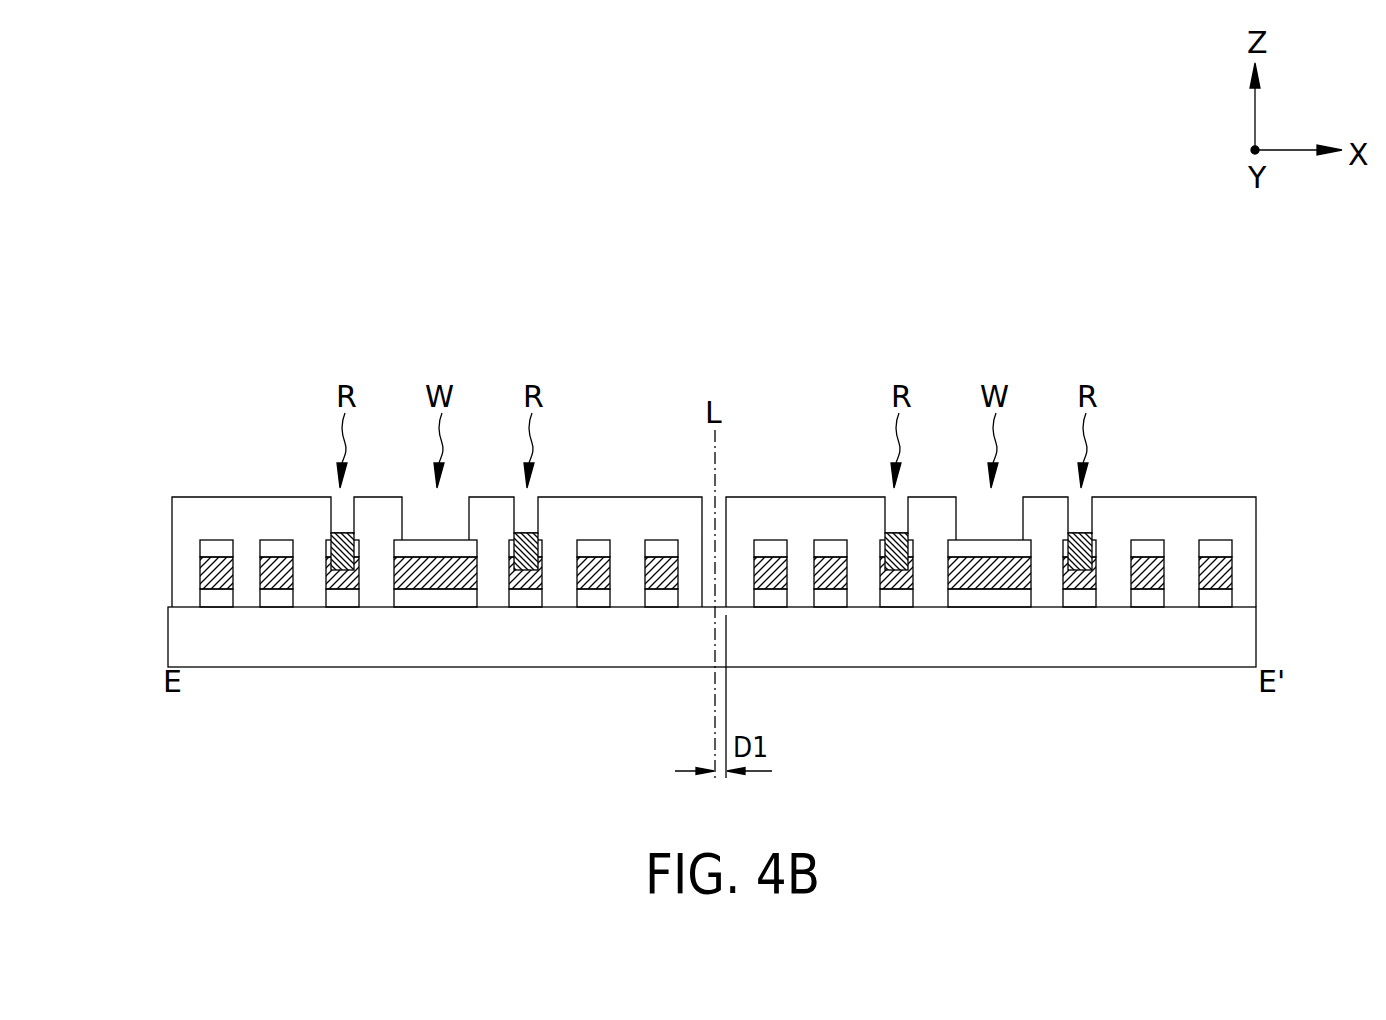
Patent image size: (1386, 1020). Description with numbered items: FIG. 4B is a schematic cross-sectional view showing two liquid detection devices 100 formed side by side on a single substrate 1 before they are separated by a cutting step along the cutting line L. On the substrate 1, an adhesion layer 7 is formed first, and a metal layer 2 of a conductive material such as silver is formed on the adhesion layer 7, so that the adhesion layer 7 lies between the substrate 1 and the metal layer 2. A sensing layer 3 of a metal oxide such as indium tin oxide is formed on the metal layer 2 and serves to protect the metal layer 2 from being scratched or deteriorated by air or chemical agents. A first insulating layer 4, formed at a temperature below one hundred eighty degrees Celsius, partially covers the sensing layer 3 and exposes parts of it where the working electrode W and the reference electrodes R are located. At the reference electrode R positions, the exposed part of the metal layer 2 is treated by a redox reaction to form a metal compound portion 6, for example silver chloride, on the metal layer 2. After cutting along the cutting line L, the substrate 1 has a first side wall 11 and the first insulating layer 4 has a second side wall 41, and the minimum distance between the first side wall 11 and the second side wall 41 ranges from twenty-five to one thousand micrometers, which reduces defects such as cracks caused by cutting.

The liquid detection device 100 is at (693, 532).
The substrate 1 is at (1223, 638).
The metal layer 2 is at (1218, 568).
The sensing layer 3 is at (1220, 547).
The first insulating layer 4 is at (1236, 506).
The metal compound portion 6 is at (1080, 534).
The adhesion layer 7 is at (1220, 600).
The first side wall 11 is at (715, 635).
The second side wall 41 is at (726, 513).